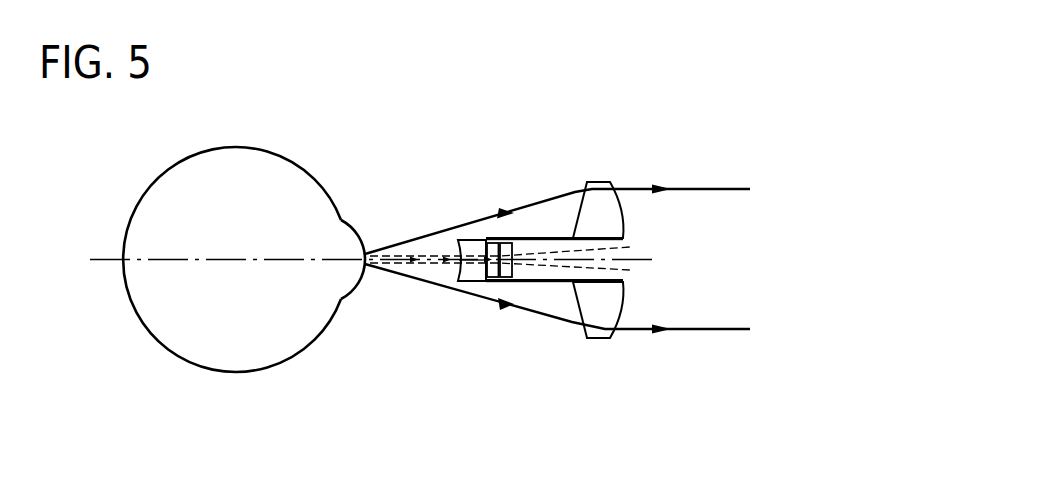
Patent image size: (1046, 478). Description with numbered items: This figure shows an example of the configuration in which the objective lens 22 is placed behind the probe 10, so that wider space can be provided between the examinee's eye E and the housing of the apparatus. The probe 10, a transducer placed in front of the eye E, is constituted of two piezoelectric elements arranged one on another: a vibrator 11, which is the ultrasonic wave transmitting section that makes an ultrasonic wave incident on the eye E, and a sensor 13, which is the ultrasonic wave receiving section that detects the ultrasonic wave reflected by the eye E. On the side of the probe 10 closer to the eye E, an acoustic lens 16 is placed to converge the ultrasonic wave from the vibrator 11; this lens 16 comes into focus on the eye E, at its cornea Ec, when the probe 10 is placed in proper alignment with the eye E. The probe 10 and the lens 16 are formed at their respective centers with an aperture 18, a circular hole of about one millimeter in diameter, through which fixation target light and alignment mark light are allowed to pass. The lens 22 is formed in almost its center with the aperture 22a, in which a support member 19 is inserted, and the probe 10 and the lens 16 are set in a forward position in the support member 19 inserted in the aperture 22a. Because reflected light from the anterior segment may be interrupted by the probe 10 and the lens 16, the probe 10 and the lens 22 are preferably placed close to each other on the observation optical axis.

The examinee's eye E is at (164, 172).
The cornea Ec is at (356, 224).
The probe 10 is at (531, 346).
The vibrator 11 is at (493, 283).
The sensor 13 is at (522, 284).
The acoustic lens 16 is at (457, 247).
The aperture 18 is at (465, 284).
The support member 19 is at (550, 238).
The lens 22 is at (600, 222).
The aperture 22a is at (598, 268).